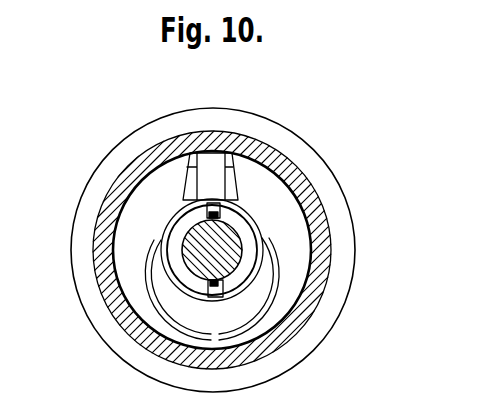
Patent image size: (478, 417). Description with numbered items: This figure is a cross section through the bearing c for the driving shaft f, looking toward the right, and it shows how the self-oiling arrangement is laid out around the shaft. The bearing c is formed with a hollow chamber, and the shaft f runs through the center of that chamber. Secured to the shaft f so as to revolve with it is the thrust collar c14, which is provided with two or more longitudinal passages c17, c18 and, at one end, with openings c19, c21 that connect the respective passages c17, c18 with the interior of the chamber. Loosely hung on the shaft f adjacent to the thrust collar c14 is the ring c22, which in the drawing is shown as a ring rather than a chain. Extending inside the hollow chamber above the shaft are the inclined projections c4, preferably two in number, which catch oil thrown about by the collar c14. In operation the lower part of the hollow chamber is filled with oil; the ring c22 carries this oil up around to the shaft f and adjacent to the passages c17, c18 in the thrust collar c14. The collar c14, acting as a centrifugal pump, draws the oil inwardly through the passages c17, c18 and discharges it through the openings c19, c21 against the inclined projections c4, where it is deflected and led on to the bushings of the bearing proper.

The bearing c is at (213, 133).
The projections c4 is at (330, 122).
The longitudinal passage c18 is at (208, 209).
The opening c19 is at (221, 208).
The thrust collar c14 is at (250, 233).
The driving shaft f is at (232, 257).
The longitudinal passage c17 is at (224, 283).
The opening c21 is at (226, 292).
The ring or chain c22 is at (163, 312).